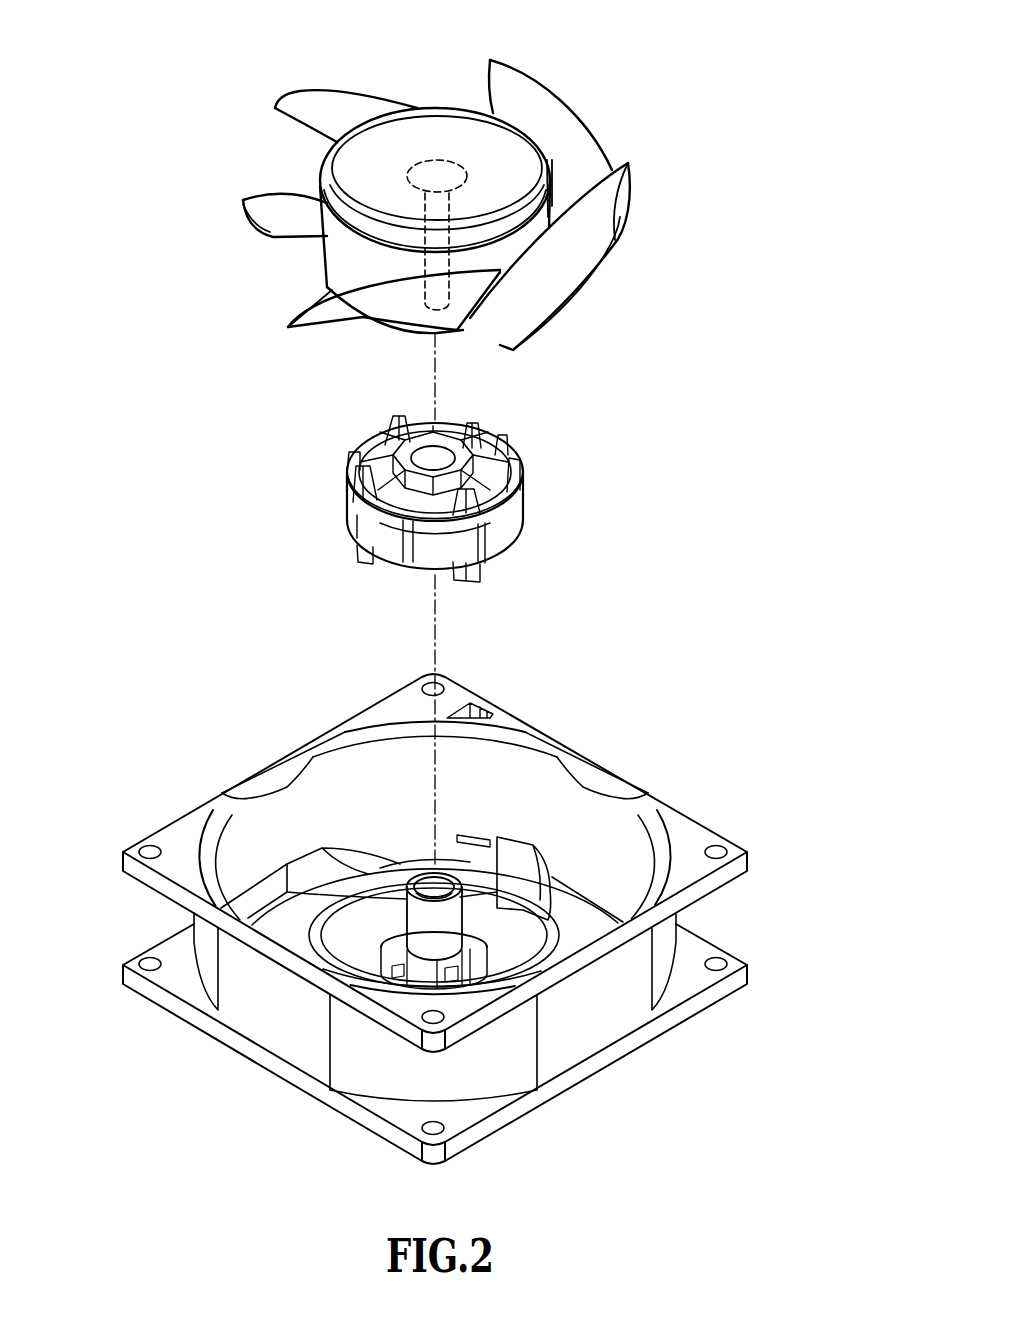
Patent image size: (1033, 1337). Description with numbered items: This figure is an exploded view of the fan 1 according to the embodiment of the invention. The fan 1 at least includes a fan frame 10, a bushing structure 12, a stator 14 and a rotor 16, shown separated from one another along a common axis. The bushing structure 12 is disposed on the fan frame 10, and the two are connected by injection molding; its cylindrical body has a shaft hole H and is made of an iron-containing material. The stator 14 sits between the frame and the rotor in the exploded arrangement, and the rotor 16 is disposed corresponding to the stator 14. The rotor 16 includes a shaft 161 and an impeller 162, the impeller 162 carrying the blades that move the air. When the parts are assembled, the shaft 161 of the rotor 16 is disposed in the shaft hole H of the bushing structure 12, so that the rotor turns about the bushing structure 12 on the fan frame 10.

The fan 1 is at (140, 80).
The fan frame 10 is at (677, 828).
The bushing structure 12 is at (423, 917).
The shaft hole H is at (429, 880).
The stator 14 is at (528, 463).
The rotor 16 is at (570, 66).
The shaft 161 is at (417, 203).
The impeller 162 is at (570, 137).